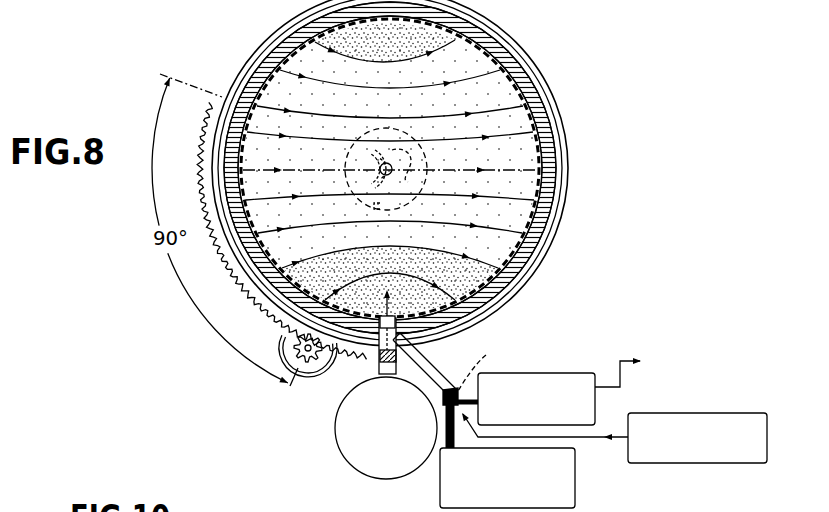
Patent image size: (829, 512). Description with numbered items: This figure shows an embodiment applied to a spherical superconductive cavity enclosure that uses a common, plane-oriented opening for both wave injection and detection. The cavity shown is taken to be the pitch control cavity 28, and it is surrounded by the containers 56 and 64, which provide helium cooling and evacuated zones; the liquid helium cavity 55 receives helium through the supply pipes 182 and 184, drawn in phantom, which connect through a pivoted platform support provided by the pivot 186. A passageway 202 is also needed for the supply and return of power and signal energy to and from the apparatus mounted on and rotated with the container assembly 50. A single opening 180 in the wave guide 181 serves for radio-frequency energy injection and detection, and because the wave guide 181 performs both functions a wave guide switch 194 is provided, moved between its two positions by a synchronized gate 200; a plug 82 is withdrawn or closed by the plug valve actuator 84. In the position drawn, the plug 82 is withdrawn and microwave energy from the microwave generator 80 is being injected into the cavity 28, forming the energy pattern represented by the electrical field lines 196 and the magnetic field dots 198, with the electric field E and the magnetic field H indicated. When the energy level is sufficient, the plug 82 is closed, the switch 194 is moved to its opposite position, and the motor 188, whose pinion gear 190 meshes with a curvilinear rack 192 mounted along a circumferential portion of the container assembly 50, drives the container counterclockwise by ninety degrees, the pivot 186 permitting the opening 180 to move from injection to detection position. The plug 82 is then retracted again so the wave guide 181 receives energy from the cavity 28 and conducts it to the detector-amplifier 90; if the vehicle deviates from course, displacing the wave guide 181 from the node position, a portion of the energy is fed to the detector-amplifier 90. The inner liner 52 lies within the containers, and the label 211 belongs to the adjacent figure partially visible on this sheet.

In FIG. 8, the pitch control cavity 28 is at (398, 59).
In FIG. 8, the container assembly 50 is at (600, 140).
In FIG. 8, the inner liner 52 is at (507, 78).
In FIG. 8, the liquid helium cavity 55 is at (508, 65).
In FIG. 8, the surrounding container 56 is at (505, 44).
In FIG. 8, the surrounding container 64 is at (262, 41).
In FIG. 8, the microwave generator 80 is at (577, 480).
In FIG. 8, the plug 82 is at (379, 328).
In FIG. 8, the plug valve actuator 84 is at (336, 428).
In FIG. 8, the detector-amplifier 90 is at (565, 372).
In FIG. 8, the opening 180 is at (391, 296).
In FIG. 8, the wave guide 181 is at (439, 362).
In FIG. 8, the helium supply pipe 182 is at (380, 206).
In FIG. 8, the helium supply pipe 184 is at (400, 208).
In FIG. 8, the pivot 186 is at (370, 148).
In FIG. 8, the motor 188 is at (285, 342).
In FIG. 8, the pinion gear 190 is at (313, 366).
In FIG. 8, the curvilinear rack 192 is at (224, 95).
In FIG. 8, the wave guide switch 194 is at (484, 370).
In FIG. 8, the electrical field lines 196 is at (360, 117).
In FIG. 8, the magnetic field dots 198 is at (398, 256).
In FIG. 8, the synchronized gate 200 is at (688, 463).
In FIG. 8, the passageway 202 is at (418, 165).
In FIG. 8, the electric field E is at (425, 89).
In FIG. 8, the magnetic field axis H is at (312, 165).
In FIG. 10, the component of FIG. 10 211 is at (291, 511).